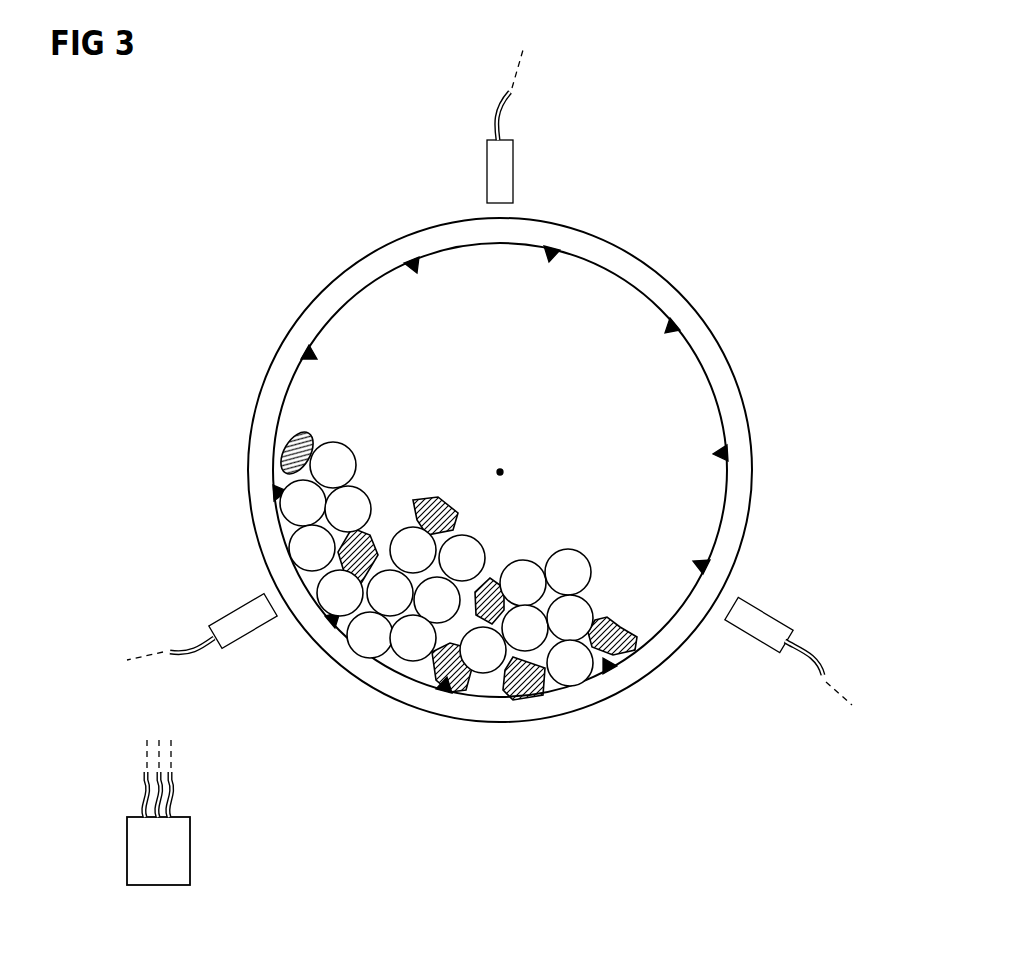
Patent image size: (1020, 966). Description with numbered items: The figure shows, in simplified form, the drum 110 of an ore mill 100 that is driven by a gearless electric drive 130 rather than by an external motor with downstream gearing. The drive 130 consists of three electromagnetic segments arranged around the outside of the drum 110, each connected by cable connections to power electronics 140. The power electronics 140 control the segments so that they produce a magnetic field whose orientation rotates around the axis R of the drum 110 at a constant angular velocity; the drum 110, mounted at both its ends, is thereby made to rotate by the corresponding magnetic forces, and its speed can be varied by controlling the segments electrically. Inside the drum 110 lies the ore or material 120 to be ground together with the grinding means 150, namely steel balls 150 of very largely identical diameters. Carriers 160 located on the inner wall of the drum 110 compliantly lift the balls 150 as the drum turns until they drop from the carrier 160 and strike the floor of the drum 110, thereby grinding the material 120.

The ore mill 100 is at (233, 213).
The drum 110 is at (638, 273).
The material to be ground 120 is at (310, 447).
The drive 130 is at (471, 392).
The power electronics 140 is at (158, 888).
The grinding means 150 is at (567, 550).
The carrier 160 is at (713, 452).
The axis R is at (500, 470).